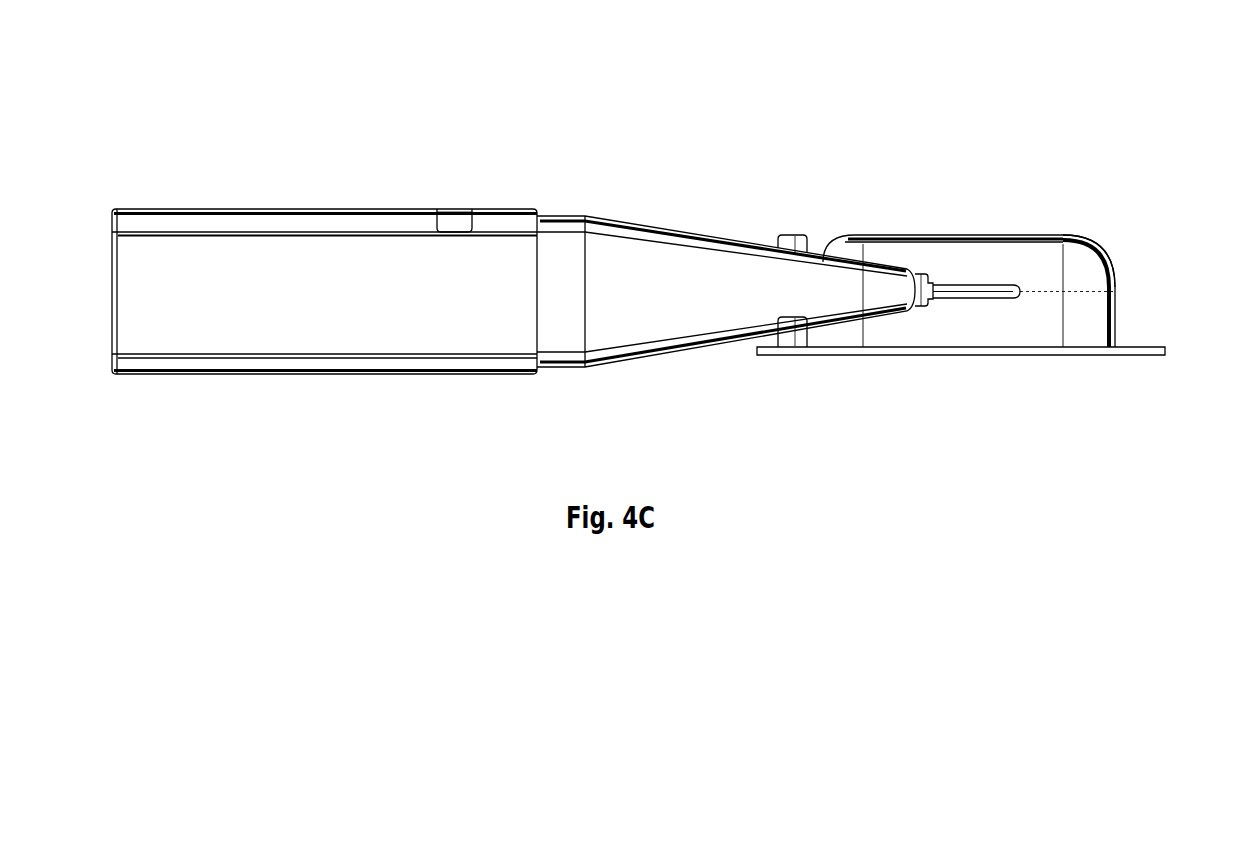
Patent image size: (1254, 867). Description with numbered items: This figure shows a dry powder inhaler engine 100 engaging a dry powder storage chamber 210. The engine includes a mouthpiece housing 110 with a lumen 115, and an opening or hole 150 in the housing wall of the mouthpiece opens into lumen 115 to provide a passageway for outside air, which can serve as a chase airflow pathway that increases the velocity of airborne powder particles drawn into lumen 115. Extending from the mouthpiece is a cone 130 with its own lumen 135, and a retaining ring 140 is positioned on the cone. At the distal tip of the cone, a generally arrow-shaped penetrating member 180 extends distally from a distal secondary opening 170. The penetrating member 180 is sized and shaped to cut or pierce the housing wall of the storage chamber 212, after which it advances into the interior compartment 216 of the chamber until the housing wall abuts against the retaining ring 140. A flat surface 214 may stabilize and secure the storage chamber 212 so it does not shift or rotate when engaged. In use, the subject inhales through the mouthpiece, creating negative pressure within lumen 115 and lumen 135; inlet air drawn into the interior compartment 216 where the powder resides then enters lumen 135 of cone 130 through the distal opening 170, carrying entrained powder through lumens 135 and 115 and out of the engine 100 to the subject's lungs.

The dry powder inhaler engine 100 is at (570, 163).
The mouthpiece housing 110 is at (229, 224).
The lumen of mouthpiece 115 is at (325, 271).
The cone 130 is at (637, 235).
The lumen of cone 135 is at (740, 275).
The retaining ring 140 is at (793, 237).
The opening or hole 150 is at (457, 223).
The distal secondary opening 170 is at (848, 433).
The penetrating member 180 is at (1009, 298).
The dry powder storage chamber 210 is at (1048, 165).
The storage chamber 212 is at (1066, 232).
The flat surface 214 is at (1142, 347).
The interior compartment 216 is at (977, 311).